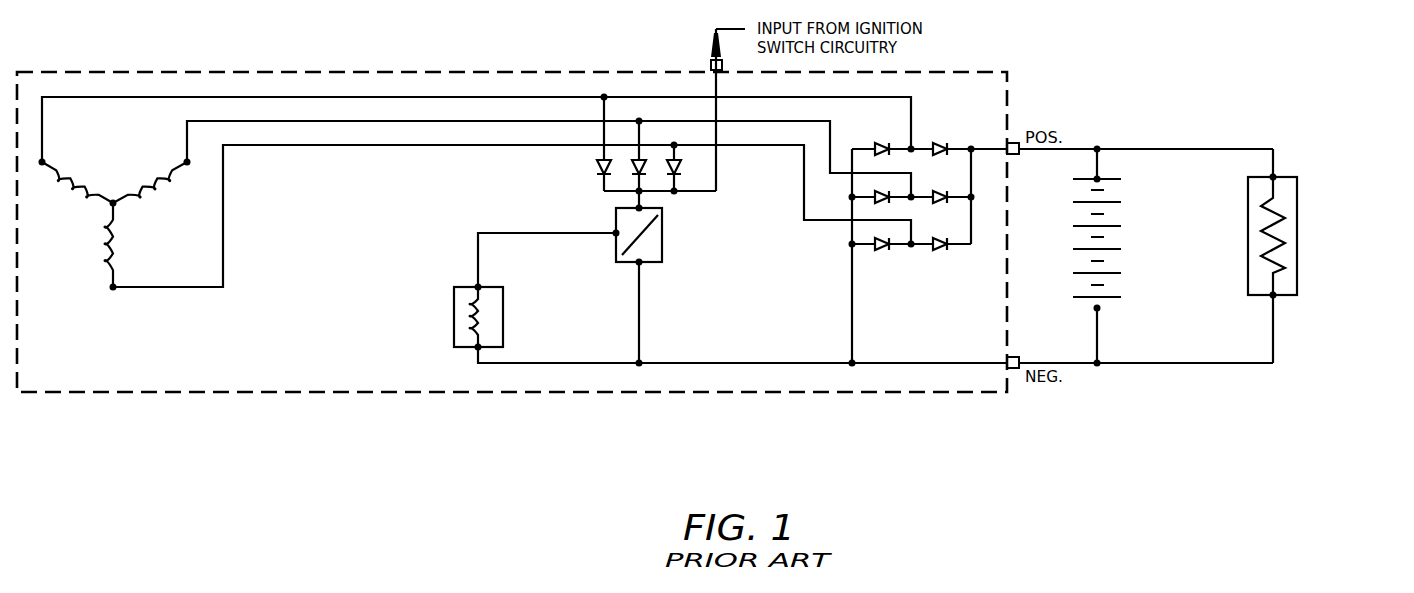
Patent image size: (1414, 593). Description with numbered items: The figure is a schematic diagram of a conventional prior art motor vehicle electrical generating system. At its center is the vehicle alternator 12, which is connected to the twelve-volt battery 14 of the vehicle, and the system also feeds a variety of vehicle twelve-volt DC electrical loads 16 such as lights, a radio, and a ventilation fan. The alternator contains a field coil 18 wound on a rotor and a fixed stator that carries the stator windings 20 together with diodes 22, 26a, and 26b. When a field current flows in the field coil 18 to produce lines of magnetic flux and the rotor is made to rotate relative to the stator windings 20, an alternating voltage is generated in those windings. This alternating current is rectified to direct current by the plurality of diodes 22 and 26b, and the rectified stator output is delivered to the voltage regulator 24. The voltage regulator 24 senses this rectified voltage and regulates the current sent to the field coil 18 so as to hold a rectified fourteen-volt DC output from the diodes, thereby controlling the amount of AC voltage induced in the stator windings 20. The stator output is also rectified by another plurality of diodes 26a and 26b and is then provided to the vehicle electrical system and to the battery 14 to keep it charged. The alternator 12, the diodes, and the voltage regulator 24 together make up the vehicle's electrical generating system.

The vehicle alternator 12 is at (860, 398).
The 12-volt battery 14 is at (1130, 280).
The vehicle 12-volt DC electrical loads 16 is at (1305, 276).
The field coil 18 is at (500, 283).
The stator windings 20 is at (150, 233).
The diodes 22 is at (596, 168).
The voltage regulator 24 is at (662, 268).
The diodes 26a is at (972, 172).
The diodes 26b is at (903, 150).